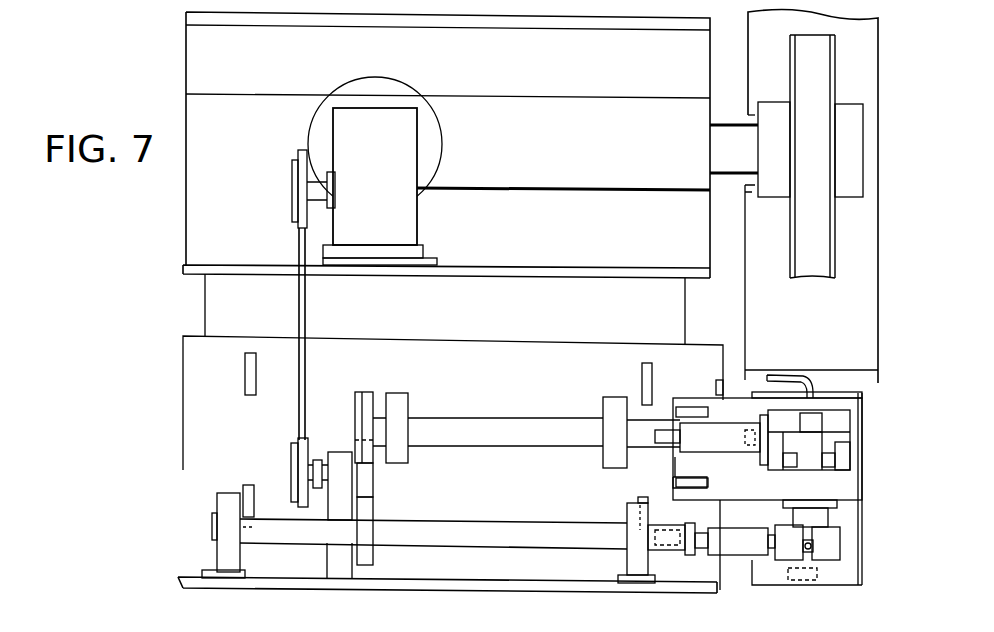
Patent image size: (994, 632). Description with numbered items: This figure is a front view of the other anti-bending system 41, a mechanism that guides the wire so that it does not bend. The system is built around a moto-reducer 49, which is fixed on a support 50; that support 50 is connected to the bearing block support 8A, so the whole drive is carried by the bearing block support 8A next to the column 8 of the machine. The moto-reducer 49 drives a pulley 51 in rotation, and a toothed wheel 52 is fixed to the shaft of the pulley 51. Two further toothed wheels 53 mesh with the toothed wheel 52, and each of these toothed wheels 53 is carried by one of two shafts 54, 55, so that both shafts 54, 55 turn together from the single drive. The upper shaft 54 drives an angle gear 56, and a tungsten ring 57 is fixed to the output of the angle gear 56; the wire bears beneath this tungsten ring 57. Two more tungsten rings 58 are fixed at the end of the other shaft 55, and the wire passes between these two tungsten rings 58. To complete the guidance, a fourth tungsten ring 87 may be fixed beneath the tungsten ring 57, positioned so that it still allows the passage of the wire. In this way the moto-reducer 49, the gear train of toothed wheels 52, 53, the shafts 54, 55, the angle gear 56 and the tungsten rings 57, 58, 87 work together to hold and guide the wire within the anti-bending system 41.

The column 8 is at (815, 258).
The bearing block support 8A is at (601, 160).
The anti-bending system 41 is at (158, 370).
The moto-reducer 49 is at (392, 97).
The support 50 is at (222, 284).
The pulley 51 is at (295, 459).
The toothed wheel 52 is at (365, 482).
The toothed wheel 53 is at (367, 403).
The shaft 54 is at (490, 437).
The shaft 55 is at (552, 537).
The angle gear 56 is at (835, 427).
The tungsten ring 57 is at (822, 521).
The tungsten ring 58 is at (823, 548).
The fourth tungsten ring 87 is at (818, 577).